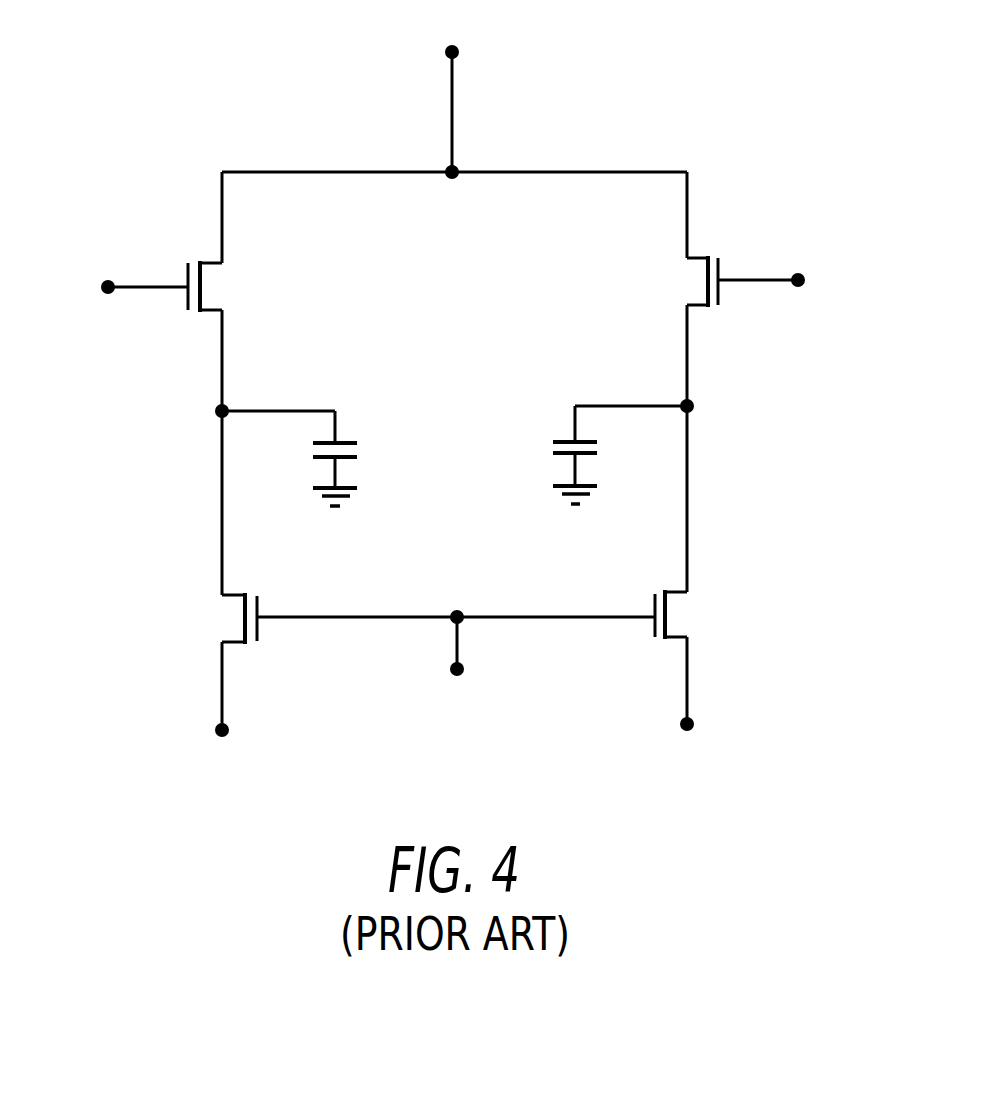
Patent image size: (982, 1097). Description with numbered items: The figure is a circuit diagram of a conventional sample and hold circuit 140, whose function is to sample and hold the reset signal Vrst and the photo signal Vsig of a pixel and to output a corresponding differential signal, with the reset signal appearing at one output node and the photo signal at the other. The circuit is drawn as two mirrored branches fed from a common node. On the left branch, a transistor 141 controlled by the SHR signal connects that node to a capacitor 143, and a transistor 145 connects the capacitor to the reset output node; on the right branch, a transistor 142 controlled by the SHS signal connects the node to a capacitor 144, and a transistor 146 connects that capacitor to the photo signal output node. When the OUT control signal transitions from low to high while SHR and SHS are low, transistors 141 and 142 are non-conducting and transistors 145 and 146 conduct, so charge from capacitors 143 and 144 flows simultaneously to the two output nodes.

The sample and hold circuit 140 is at (187, 58).
The transistor 141 is at (202, 289).
The transistor 142 is at (706, 285).
The capacitor 143 is at (345, 440).
The capacitor 144 is at (570, 440).
The transistor 145 is at (258, 606).
The transistor 146 is at (653, 603).